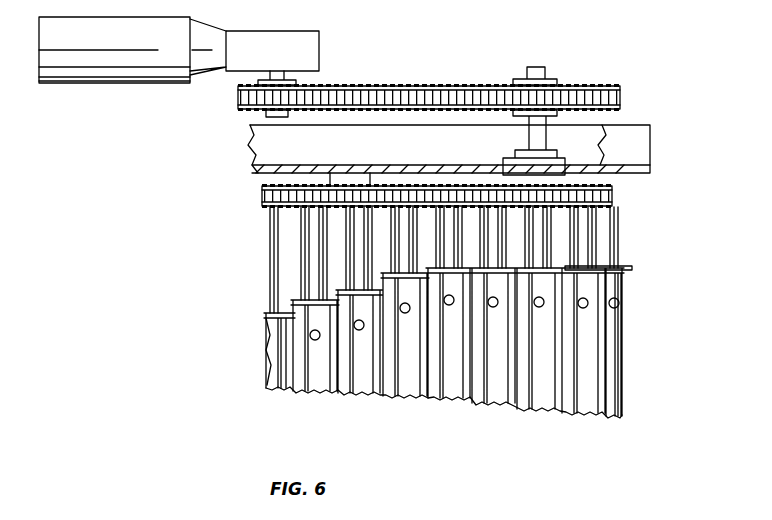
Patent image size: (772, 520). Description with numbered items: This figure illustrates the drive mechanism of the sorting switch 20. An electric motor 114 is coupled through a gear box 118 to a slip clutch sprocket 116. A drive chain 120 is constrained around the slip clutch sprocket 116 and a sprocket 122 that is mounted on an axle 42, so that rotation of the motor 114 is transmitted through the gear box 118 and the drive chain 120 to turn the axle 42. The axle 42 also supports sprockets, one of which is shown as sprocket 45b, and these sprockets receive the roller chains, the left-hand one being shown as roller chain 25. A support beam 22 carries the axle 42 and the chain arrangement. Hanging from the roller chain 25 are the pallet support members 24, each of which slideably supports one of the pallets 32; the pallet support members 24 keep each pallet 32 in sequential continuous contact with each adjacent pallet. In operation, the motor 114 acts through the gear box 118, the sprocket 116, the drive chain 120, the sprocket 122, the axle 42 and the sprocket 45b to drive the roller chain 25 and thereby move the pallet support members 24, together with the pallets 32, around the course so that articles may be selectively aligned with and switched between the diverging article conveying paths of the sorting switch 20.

The electric motor 114 is at (55, 85).
The gear box 118 is at (230, 78).
The slip clutch sprocket 116 is at (245, 117).
The drive chain 120 is at (345, 88).
The axle 42 is at (548, 75).
The sprocket 122 is at (594, 86).
The support beam 22 is at (650, 132).
The sorting switch 20 is at (222, 210).
The sprocket 45b is at (614, 185).
The roller chain 25 is at (268, 205).
The pallet support member 24 is at (292, 270).
The pallet 32 is at (537, 413).